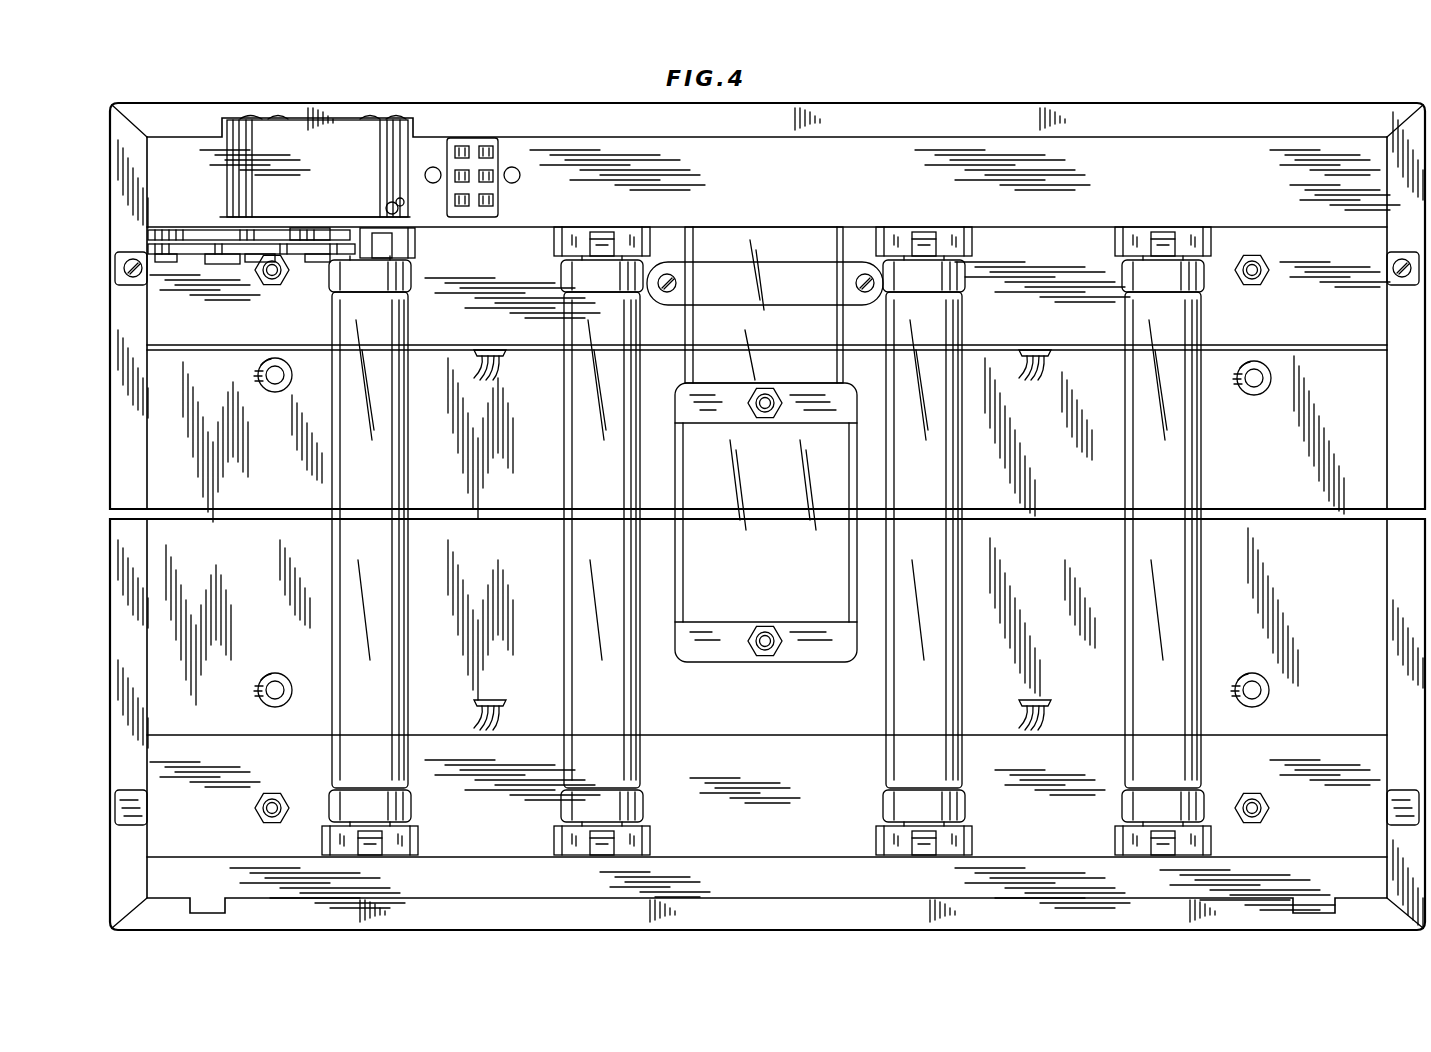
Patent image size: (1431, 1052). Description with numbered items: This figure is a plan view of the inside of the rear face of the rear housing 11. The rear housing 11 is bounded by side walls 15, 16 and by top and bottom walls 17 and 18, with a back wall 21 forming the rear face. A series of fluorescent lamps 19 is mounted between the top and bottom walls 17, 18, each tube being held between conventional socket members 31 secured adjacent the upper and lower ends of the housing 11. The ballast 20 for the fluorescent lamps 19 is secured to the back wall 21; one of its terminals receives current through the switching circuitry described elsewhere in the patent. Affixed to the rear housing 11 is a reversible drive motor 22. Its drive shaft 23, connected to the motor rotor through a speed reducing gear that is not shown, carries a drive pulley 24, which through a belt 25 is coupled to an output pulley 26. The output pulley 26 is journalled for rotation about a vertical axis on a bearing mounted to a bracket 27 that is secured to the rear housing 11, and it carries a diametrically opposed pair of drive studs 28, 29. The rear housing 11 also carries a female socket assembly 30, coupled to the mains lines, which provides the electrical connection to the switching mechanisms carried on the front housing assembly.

The rear housing 11 is at (1422, 93).
The side wall 15 is at (1422, 102).
The side wall 16 is at (114, 472).
The top wall 17 is at (1222, 102).
The bottom wall 18 is at (1392, 934).
The fluorescent lamps 19 is at (577, 490).
The ballast 20 is at (707, 612).
The back wall 21 is at (1262, 444).
The drive motor 22 is at (390, 170).
The drive shaft 23 is at (316, 232).
The drive pulley 24 is at (346, 252).
The belt 25 is at (280, 252).
The output pulley 26 is at (214, 232).
The bracket 27 is at (162, 232).
The drive stud 28 is at (243, 254).
The drive stud 29 is at (160, 256).
The female socket assembly 30 is at (493, 148).
The socket members 31 is at (592, 230).